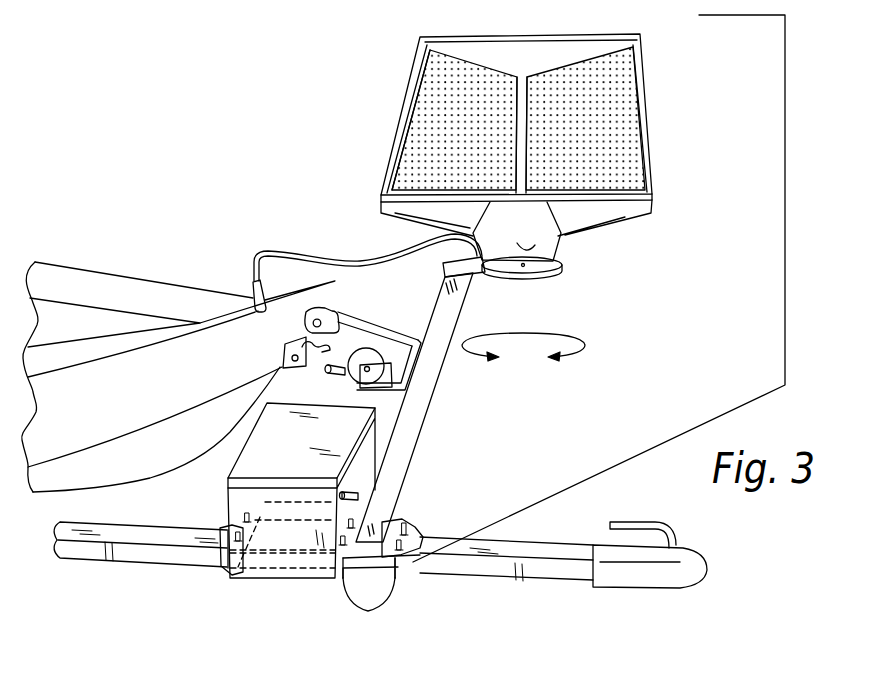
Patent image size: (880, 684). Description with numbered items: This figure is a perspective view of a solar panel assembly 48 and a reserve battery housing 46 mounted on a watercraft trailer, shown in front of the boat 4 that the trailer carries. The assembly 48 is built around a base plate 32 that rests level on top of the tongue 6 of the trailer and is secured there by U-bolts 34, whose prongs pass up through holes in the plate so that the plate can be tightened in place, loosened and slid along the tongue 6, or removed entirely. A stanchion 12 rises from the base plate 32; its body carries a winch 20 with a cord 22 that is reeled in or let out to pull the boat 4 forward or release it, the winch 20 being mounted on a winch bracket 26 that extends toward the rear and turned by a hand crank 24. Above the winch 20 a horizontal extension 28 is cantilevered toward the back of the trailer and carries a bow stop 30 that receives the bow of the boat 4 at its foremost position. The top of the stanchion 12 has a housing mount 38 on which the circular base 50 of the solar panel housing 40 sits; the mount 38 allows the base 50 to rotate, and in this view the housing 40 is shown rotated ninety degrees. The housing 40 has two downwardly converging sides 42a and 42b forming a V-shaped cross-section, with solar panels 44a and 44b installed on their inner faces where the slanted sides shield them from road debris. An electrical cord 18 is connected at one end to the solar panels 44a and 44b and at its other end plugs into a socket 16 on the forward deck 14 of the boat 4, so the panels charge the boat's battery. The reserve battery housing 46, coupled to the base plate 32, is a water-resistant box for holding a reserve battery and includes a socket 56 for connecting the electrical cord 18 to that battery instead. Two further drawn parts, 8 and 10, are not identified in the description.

The boat 4 is at (84, 259).
The tongue 6 is at (538, 580).
The clamp sleeve 8 is at (677, 588).
The handle 10 is at (641, 522).
The stanchion 12 is at (422, 437).
The forward deck 14 is at (300, 293).
The socket 16 is at (261, 313).
The electrical cord 18 is at (255, 258).
The winch 20 is at (404, 340).
The cord 22 is at (320, 351).
The hand crank 24 is at (335, 385).
The winch bracket 26 is at (384, 406).
The horizontal extension 28 is at (378, 325).
The bow stop 30 is at (328, 306).
The base plate 32 is at (415, 530).
The U-bolt 34 is at (235, 580).
The housing mount 38 is at (493, 277).
The solar panel housing 40 is at (508, 141).
The downwardly slanting left side 42a is at (440, 230).
The downwardly slanting right side 42b is at (615, 217).
The solar panel 44a is at (427, 68).
The solar panel 44b is at (630, 113).
The reserve battery housing 46 is at (228, 503).
The solar panel assembly 48 is at (785, 199).
The base 50 is at (566, 256).
The socket 56 is at (362, 495).